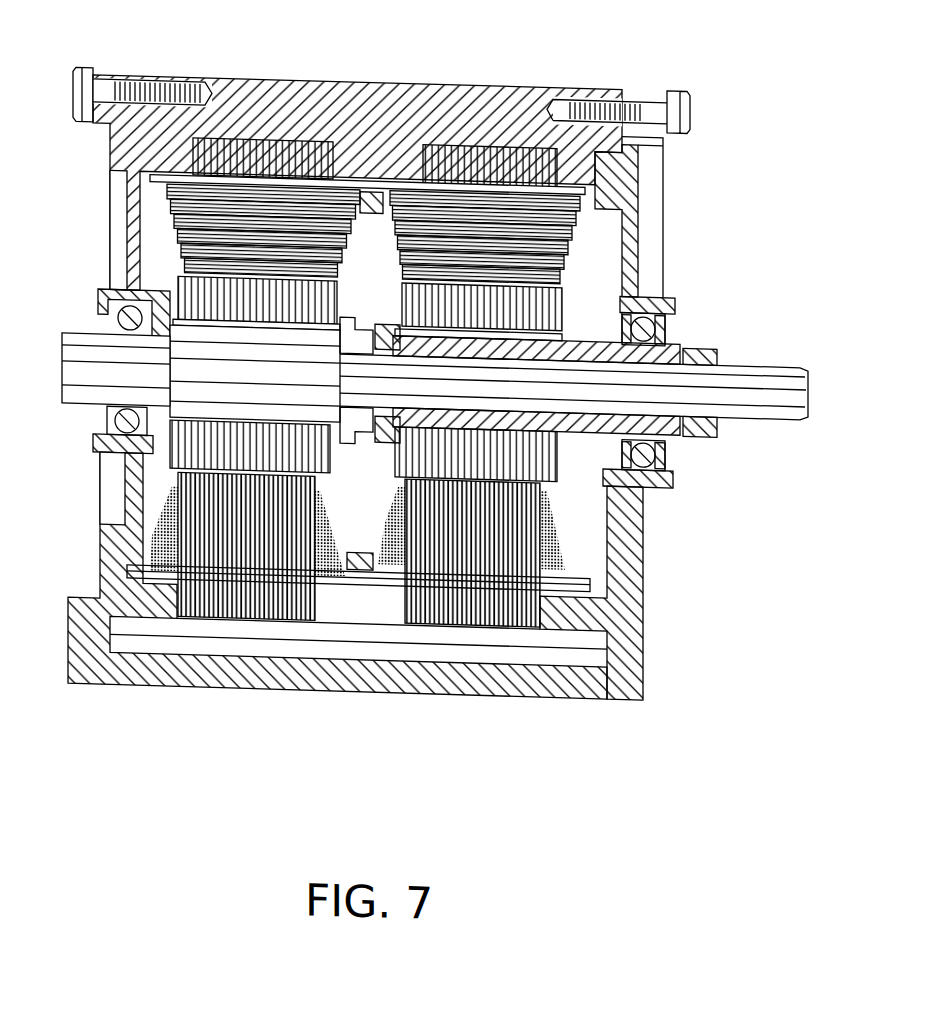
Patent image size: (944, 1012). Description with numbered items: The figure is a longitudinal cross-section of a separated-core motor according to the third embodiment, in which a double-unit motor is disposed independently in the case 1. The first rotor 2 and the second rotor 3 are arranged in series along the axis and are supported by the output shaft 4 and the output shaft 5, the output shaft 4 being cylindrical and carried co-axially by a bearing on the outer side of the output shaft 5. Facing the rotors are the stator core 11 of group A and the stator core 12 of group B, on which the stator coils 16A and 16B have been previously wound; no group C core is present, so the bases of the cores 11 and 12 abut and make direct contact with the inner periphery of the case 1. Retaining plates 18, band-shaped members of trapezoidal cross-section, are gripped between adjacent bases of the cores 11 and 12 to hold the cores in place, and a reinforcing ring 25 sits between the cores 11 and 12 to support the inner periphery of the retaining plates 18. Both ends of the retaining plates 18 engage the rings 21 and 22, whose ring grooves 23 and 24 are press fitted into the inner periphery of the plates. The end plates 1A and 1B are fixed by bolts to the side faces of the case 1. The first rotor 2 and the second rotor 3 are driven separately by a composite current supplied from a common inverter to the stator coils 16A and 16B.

The case 1 is at (442, 96).
The end plate 1A is at (637, 250).
The end plate 1B is at (123, 493).
The first rotor 2 is at (170, 291).
The second rotor 3 is at (565, 472).
The output shaft 4 is at (698, 335).
The output shaft 5 is at (763, 366).
The core 11 is at (240, 602).
The core 12 is at (480, 618).
The stator coil 16A is at (265, 218).
The stator coil 16B is at (520, 209).
The retaining plate 18 is at (228, 180).
The ring 21 is at (612, 156).
The ring 22 is at (143, 155).
The ring groove 23 is at (577, 177).
The ring groove 24 is at (170, 174).
The reinforcing ring 25 is at (368, 193).